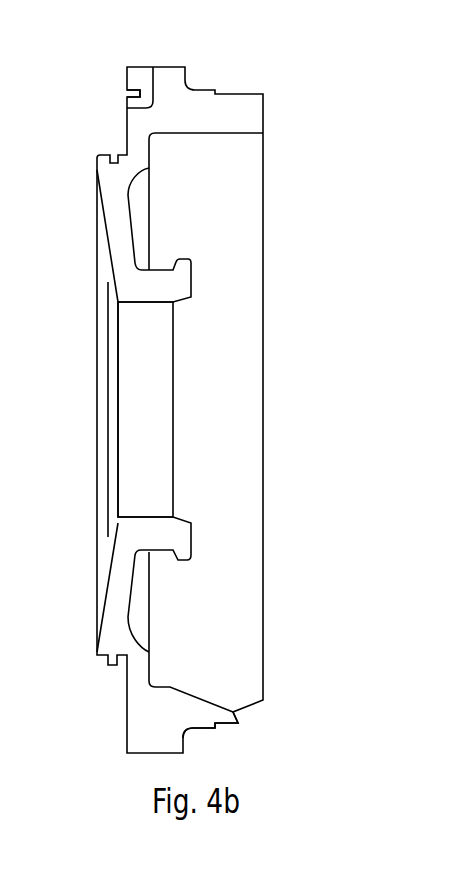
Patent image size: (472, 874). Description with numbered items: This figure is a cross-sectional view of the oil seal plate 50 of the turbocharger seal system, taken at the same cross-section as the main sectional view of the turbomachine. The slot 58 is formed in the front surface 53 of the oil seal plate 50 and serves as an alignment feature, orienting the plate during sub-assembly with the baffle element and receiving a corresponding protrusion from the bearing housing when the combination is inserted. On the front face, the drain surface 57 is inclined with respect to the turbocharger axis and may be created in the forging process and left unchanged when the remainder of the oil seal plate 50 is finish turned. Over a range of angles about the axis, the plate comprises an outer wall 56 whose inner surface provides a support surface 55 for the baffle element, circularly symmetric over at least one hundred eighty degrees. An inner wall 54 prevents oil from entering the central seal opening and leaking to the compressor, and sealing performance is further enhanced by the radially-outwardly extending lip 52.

The oil seal plate 50 is at (227, 384).
The radially-outwardly extending lip 52 is at (180, 278).
The front surface 53 is at (104, 241).
The inner wall 54 is at (140, 288).
The support surface 55 is at (217, 133).
The outer wall 56 is at (178, 110).
The drain surface 57 is at (197, 697).
The slot 58 is at (138, 88).